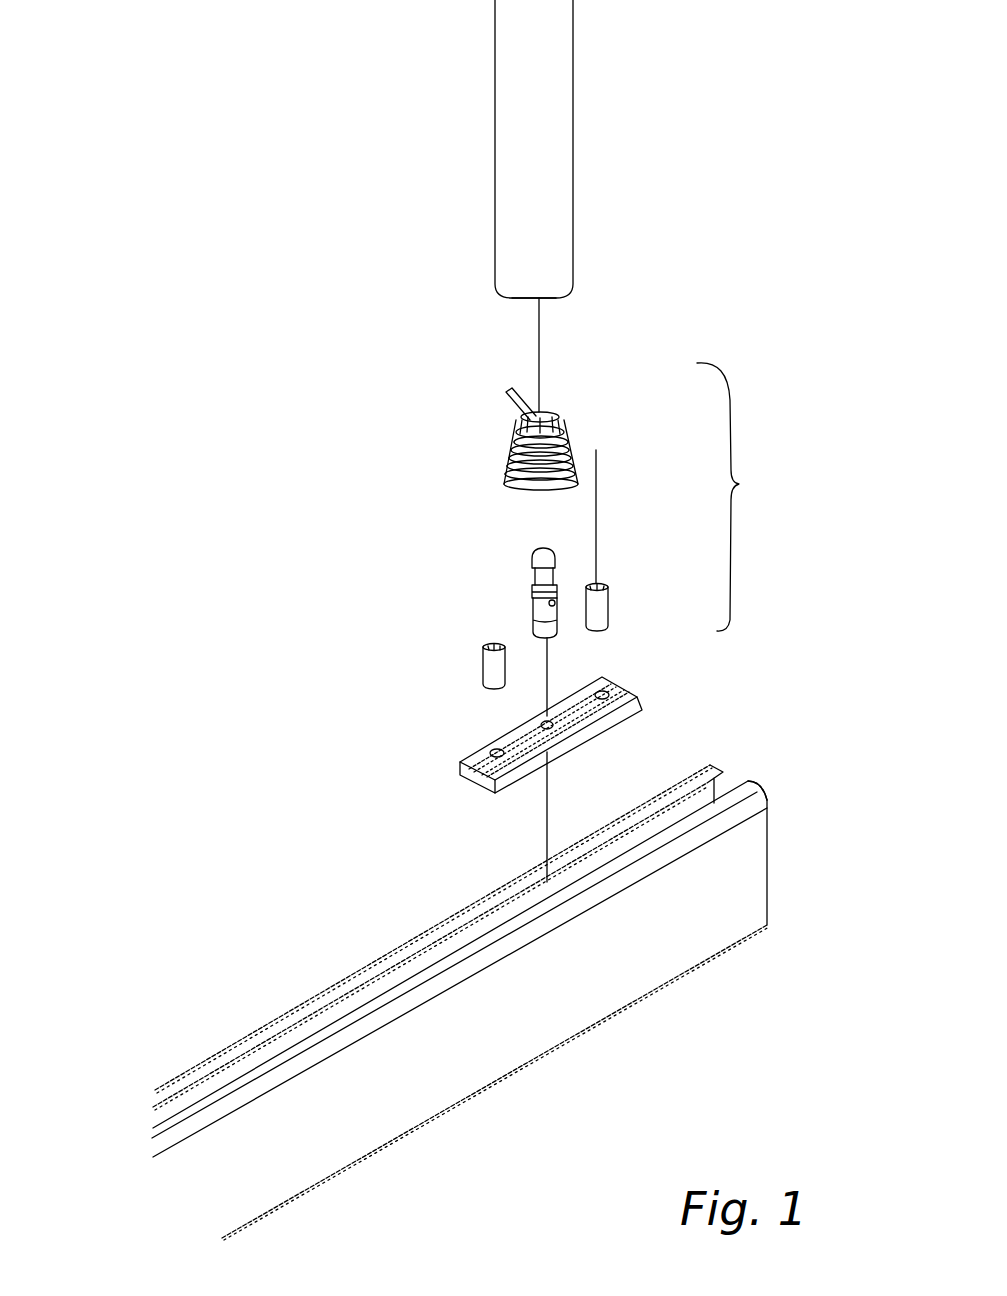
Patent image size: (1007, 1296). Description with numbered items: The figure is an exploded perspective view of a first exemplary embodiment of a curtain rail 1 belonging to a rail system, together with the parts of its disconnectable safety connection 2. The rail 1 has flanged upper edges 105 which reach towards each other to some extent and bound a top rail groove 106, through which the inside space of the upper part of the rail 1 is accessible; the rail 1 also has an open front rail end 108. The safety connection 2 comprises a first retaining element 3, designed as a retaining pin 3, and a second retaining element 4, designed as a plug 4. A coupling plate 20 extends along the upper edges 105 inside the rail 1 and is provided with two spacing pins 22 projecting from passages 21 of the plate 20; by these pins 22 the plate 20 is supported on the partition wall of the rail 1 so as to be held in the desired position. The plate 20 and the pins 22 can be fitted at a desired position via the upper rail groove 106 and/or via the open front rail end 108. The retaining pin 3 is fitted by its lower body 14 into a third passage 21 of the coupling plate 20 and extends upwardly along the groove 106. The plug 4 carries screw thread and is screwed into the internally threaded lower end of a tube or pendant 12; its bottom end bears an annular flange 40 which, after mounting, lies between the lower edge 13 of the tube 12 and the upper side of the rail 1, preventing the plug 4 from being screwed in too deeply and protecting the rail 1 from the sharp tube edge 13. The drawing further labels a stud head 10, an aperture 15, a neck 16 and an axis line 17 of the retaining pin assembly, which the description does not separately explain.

The curtain rail 1 is at (735, 892).
The disconnectable safety connection 2 is at (734, 497).
The first retaining element 3 is at (538, 596).
The second retaining element 4 is at (510, 438).
The stud 10 is at (549, 553).
The tube 12 is at (548, 173).
The lower edge of the tube 13 is at (572, 300).
The lower body 14 is at (540, 626).
The aperture 15 is at (555, 604).
The neck 16 is at (540, 573).
The axis line 17 is at (547, 675).
The coupling plate 20 is at (462, 760).
The passages 21 is at (606, 745).
The spacing pins 22 is at (493, 658).
The annular flange 40 is at (507, 467).
The upper edges 105 is at (370, 1010).
The top rail groove 106 is at (160, 1092).
The open front rail end 108 is at (769, 781).